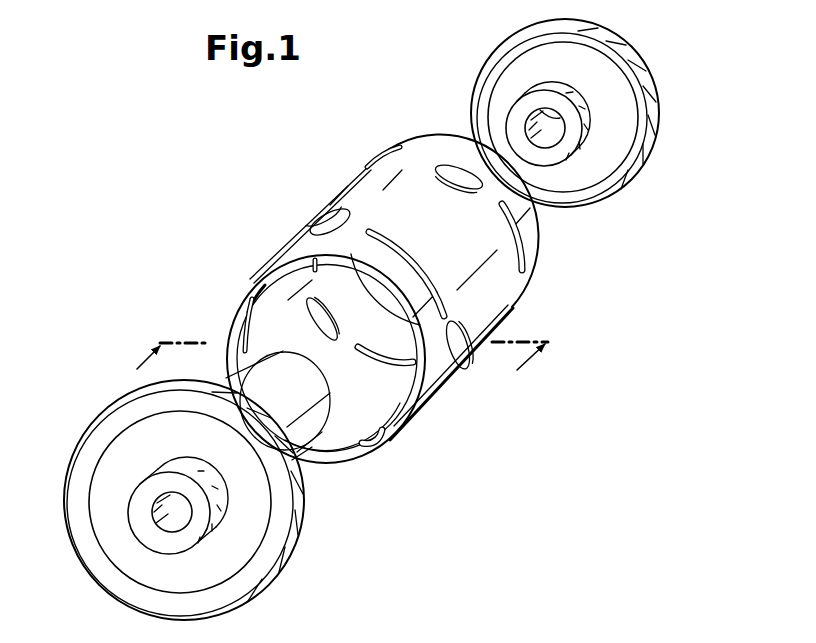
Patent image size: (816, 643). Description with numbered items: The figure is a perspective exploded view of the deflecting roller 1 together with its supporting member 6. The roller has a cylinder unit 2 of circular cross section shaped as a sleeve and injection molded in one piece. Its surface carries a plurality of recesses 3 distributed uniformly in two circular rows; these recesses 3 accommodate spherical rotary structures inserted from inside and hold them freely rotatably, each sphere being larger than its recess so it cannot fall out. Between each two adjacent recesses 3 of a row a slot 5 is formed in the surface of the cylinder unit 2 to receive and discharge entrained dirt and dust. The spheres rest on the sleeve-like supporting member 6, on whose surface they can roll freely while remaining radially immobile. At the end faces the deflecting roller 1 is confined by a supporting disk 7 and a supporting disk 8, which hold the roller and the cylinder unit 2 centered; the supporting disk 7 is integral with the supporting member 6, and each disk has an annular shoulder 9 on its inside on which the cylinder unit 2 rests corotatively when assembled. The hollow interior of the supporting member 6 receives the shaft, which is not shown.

The deflecting roller 1 is at (258, 262).
The cylinder unit 2 is at (431, 131).
The recesses 3 is at (318, 222).
The slot 5 is at (385, 155).
The supporting member 6 is at (313, 453).
The supporting disk 7 is at (108, 415).
The supporting disk 8 is at (557, 110).
The annular shoulder 9 is at (625, 72).